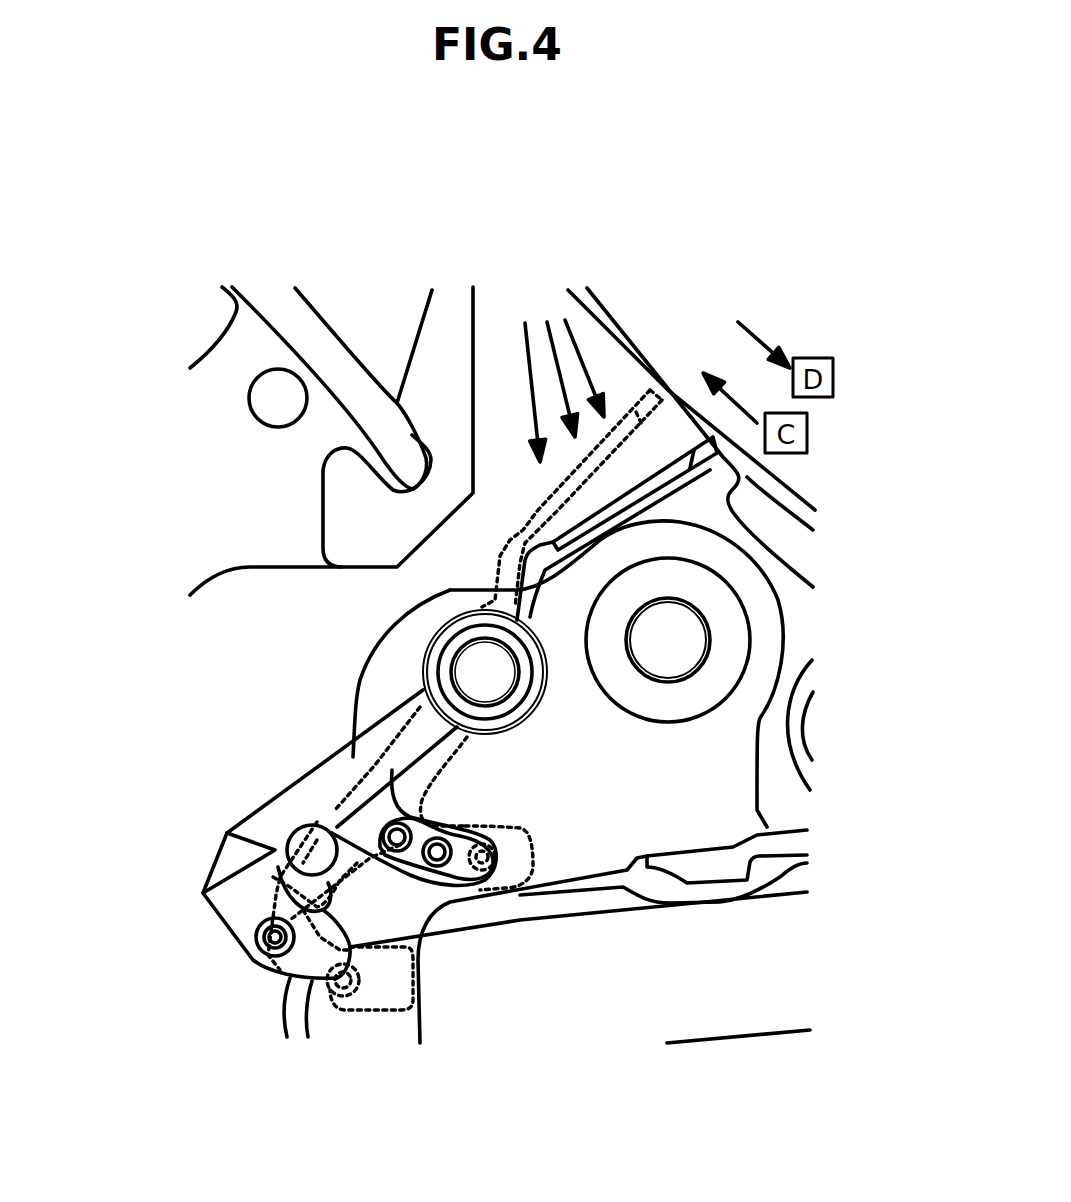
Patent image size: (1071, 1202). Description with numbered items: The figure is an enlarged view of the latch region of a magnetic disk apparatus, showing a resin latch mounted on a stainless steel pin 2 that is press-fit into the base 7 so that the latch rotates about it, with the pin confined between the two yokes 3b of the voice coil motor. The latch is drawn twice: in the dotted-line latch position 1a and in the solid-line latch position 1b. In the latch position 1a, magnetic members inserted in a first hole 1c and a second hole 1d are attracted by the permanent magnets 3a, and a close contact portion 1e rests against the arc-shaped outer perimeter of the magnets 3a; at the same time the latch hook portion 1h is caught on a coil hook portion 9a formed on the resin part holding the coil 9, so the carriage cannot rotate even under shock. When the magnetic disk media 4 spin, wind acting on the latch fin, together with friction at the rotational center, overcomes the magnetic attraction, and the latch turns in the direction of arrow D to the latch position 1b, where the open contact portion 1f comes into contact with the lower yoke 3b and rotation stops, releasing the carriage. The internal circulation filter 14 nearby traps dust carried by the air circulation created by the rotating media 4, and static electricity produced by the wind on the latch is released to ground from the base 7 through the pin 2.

The internal circulation filter 14 is at (307, 328).
The base 7 is at (265, 517).
The magnetic disk media 4 is at (855, 372).
The latch position 1a is at (620, 427).
The latch position 1b is at (667, 470).
The open contact portion 1f is at (610, 540).
The yokes 3b is at (652, 773).
The pin 2 is at (487, 677).
The latch hook portion 1h is at (233, 860).
The coil hook portion 9a is at (312, 857).
The first hole 1c is at (477, 877).
The second hole 1d is at (343, 982).
The close contact portion 1e is at (410, 990).
The permanent magnets 3a is at (560, 902).
The coil 9 is at (648, 947).